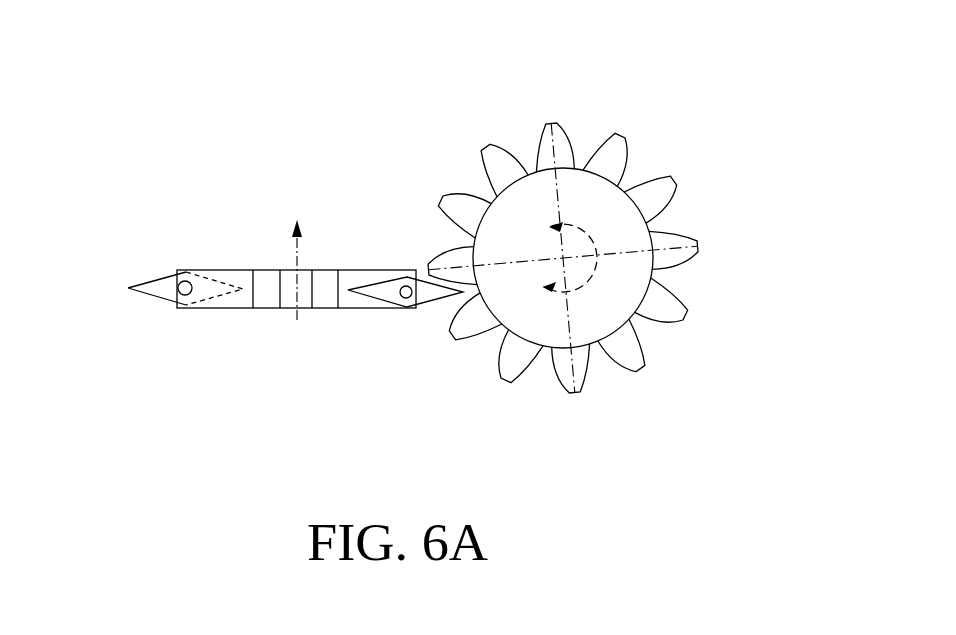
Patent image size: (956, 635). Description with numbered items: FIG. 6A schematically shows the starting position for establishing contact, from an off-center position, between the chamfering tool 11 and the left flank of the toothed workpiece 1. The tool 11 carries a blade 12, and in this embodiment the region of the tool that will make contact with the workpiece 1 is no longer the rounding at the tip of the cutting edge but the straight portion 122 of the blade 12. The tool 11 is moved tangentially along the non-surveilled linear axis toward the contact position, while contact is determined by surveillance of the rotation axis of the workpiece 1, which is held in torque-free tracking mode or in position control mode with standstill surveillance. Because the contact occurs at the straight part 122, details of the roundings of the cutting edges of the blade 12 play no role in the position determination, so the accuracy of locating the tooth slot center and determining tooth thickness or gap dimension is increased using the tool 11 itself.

The workpiece 1 is at (658, 115).
The chamfering tool 11 is at (218, 242).
The blade 12 is at (432, 310).
The straight portion 122 is at (440, 258).